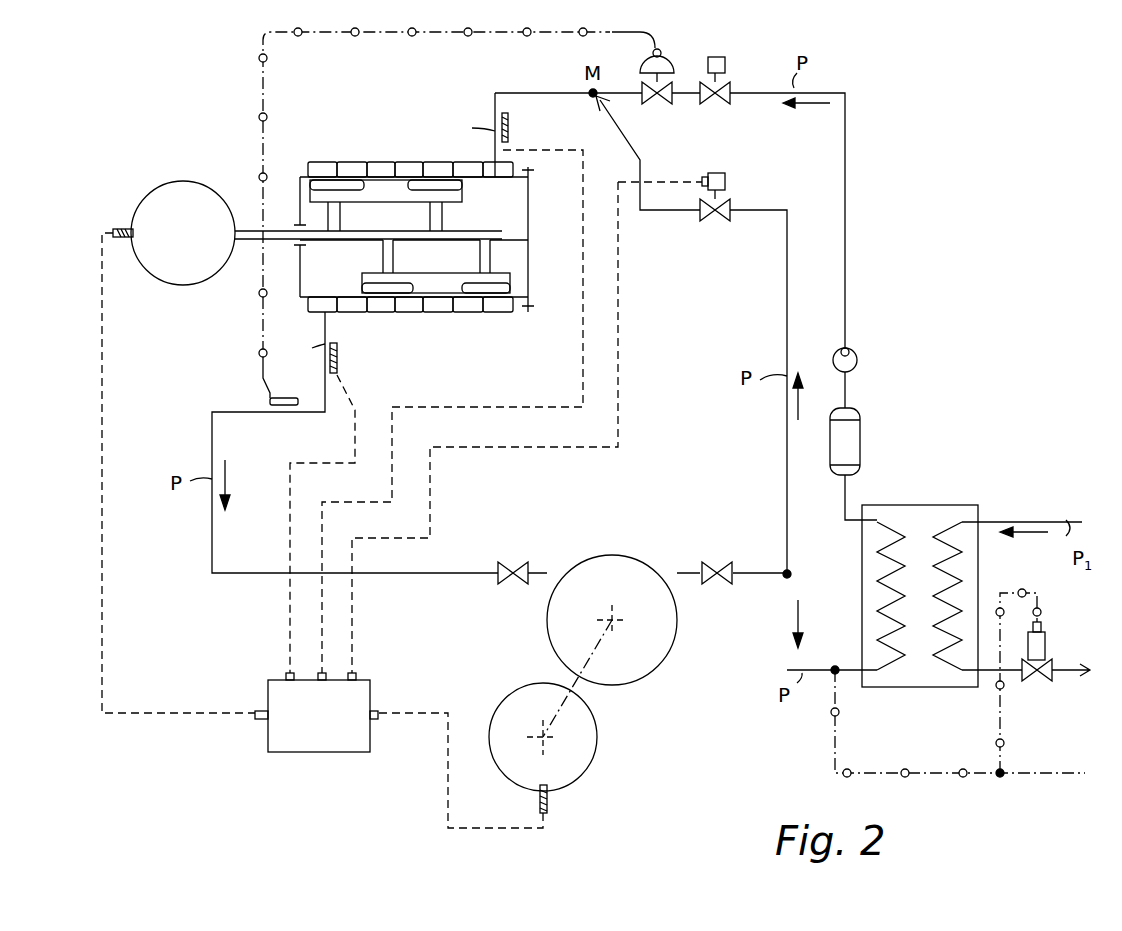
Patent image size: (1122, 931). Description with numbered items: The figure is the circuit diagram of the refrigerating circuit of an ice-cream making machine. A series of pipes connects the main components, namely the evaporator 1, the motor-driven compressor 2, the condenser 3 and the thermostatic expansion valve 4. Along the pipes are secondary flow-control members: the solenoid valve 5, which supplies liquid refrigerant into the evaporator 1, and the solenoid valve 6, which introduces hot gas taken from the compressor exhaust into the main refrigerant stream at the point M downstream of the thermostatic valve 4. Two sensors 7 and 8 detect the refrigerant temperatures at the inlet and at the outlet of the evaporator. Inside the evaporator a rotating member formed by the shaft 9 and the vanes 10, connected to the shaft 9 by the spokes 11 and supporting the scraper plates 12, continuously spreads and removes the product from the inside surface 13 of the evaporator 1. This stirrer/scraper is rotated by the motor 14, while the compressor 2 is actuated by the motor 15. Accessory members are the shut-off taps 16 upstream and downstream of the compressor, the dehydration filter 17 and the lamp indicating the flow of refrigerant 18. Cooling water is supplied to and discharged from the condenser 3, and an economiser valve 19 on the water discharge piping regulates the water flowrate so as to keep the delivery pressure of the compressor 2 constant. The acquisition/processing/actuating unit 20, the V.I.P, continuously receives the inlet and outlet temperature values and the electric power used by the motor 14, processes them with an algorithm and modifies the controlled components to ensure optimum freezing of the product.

The evaporator 1 is at (318, 162).
The motor-driven compressor 2 is at (631, 562).
The condenser 3 is at (898, 688).
The thermostatic expansion valve 4 is at (665, 65).
The solenoid valve 5 is at (722, 65).
The solenoid valve 6 is at (727, 184).
The sensor 7 is at (509, 125).
The sensor 8 is at (340, 361).
The shaft 9 is at (515, 240).
The vanes 10 is at (512, 284).
The spokes 11 is at (383, 257).
The scraper plates 12 is at (348, 180).
The inside surface 13 is at (392, 166).
The motor 14 is at (195, 185).
The motor 15 is at (594, 760).
The shut-off taps 16 is at (516, 563).
The dehydration filter 17 is at (862, 431).
The lamp indicating the flow of refrigerant 18 is at (858, 357).
The economiser valve 19 is at (1040, 684).
The acquisition/processing/actuating unit (V.I.P) 20 is at (322, 752).